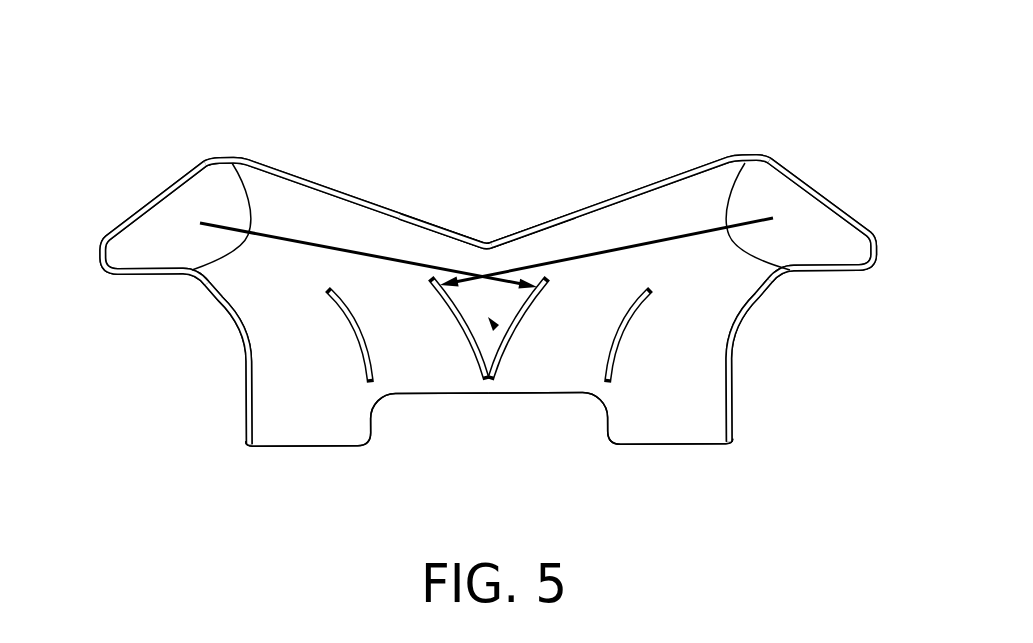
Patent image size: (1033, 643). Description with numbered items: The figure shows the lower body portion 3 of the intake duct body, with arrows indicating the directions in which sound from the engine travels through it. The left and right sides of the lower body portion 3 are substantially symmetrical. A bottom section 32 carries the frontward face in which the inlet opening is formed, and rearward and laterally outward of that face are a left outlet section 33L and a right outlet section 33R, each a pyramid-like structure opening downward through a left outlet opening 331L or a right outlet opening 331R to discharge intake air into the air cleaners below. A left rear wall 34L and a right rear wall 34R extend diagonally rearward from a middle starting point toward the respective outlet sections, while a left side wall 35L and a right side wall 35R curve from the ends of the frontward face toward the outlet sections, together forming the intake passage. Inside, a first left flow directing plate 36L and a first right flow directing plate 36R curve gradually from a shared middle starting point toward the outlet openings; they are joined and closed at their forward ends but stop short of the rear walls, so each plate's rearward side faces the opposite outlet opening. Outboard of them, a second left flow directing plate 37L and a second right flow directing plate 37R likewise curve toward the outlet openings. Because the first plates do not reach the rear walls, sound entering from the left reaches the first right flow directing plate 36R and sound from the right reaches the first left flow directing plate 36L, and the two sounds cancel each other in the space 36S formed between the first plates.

The lower body portion 3 is at (116, 136).
The bottom section 32 is at (591, 246).
The right outlet section 33R is at (99, 236).
The left outlet section 33L is at (878, 228).
The right outlet opening 331R is at (165, 240).
The left outlet opening 331L is at (811, 238).
The right rear wall 34R is at (331, 190).
The left rear wall 34L is at (646, 189).
The right side wall 35R is at (244, 394).
The left side wall 35L is at (734, 392).
The first right flow directing plate 36R is at (428, 290).
The first left flow directing plate 36L is at (542, 290).
The space 36S is at (496, 350).
The second right flow directing plate 37R is at (337, 296).
The second left flow directing plate 37L is at (639, 295).